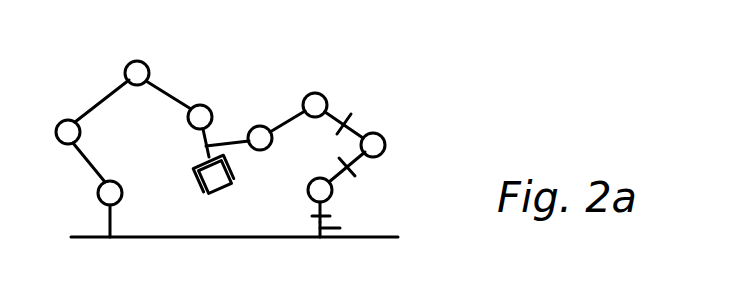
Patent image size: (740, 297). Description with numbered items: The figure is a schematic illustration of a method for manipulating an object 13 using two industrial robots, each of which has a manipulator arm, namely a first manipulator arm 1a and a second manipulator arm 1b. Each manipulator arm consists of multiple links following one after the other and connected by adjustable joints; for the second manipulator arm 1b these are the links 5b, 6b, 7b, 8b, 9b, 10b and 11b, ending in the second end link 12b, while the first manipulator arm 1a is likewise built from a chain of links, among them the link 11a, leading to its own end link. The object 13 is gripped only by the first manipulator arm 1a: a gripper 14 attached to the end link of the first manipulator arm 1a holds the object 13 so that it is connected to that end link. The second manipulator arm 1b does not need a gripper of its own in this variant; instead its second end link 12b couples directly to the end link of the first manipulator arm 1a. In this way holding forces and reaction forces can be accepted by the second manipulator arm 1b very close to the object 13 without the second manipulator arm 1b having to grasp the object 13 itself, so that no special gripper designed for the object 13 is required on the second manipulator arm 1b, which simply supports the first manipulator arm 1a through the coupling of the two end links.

The first manipulator arm 1a is at (98, 91).
The second manipulator arm 1b is at (428, 70).
The link 5b is at (340, 228).
The link 6b is at (319, 209).
The link 7b is at (339, 179).
The link 8b is at (361, 163).
The link 9b is at (356, 128).
The link 10b is at (341, 113).
The link 11a is at (234, 267).
The link 11b is at (288, 122).
The second end link 12b is at (229, 143).
The object 13 is at (212, 190).
The gripper 14 is at (194, 168).